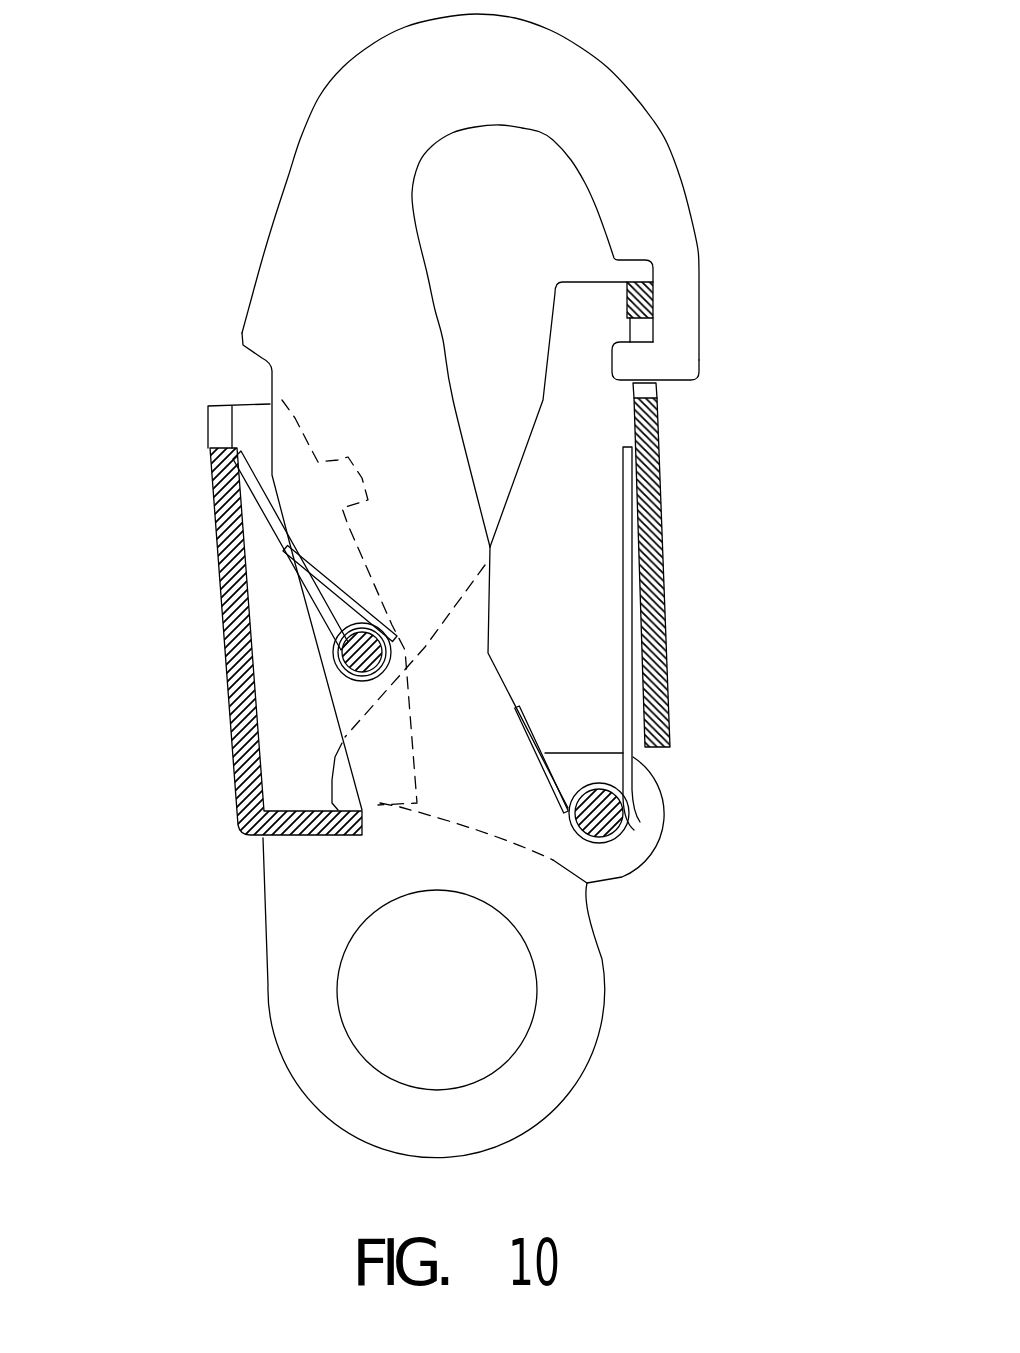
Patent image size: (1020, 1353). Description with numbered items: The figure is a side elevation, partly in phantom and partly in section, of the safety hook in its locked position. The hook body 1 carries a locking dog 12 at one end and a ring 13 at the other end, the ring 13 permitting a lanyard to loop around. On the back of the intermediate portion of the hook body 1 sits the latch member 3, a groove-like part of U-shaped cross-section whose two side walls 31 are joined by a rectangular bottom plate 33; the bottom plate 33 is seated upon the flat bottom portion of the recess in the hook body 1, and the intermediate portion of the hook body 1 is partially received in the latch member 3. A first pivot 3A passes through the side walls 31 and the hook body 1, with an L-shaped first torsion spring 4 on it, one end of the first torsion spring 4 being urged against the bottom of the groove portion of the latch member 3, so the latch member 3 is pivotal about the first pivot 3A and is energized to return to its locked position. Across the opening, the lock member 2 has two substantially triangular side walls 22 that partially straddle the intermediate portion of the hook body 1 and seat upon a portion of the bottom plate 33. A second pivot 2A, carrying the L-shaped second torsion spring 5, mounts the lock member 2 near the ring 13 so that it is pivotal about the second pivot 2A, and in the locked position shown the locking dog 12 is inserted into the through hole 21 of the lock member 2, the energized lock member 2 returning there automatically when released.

The hook body 1 is at (305, 167).
The locking dog 12 is at (633, 370).
The ring 13 is at (547, 1030).
The lock member 2 is at (652, 496).
The through hole 21 is at (642, 328).
The side walls 22 is at (540, 610).
The second pivot 2A is at (624, 830).
The second torsion spring 5 is at (627, 733).
The latch member 3 is at (213, 607).
The side walls 31 is at (280, 758).
The bottom plate 33 is at (307, 837).
The first pivot 3A is at (345, 668).
The first torsion spring 4 is at (245, 488).